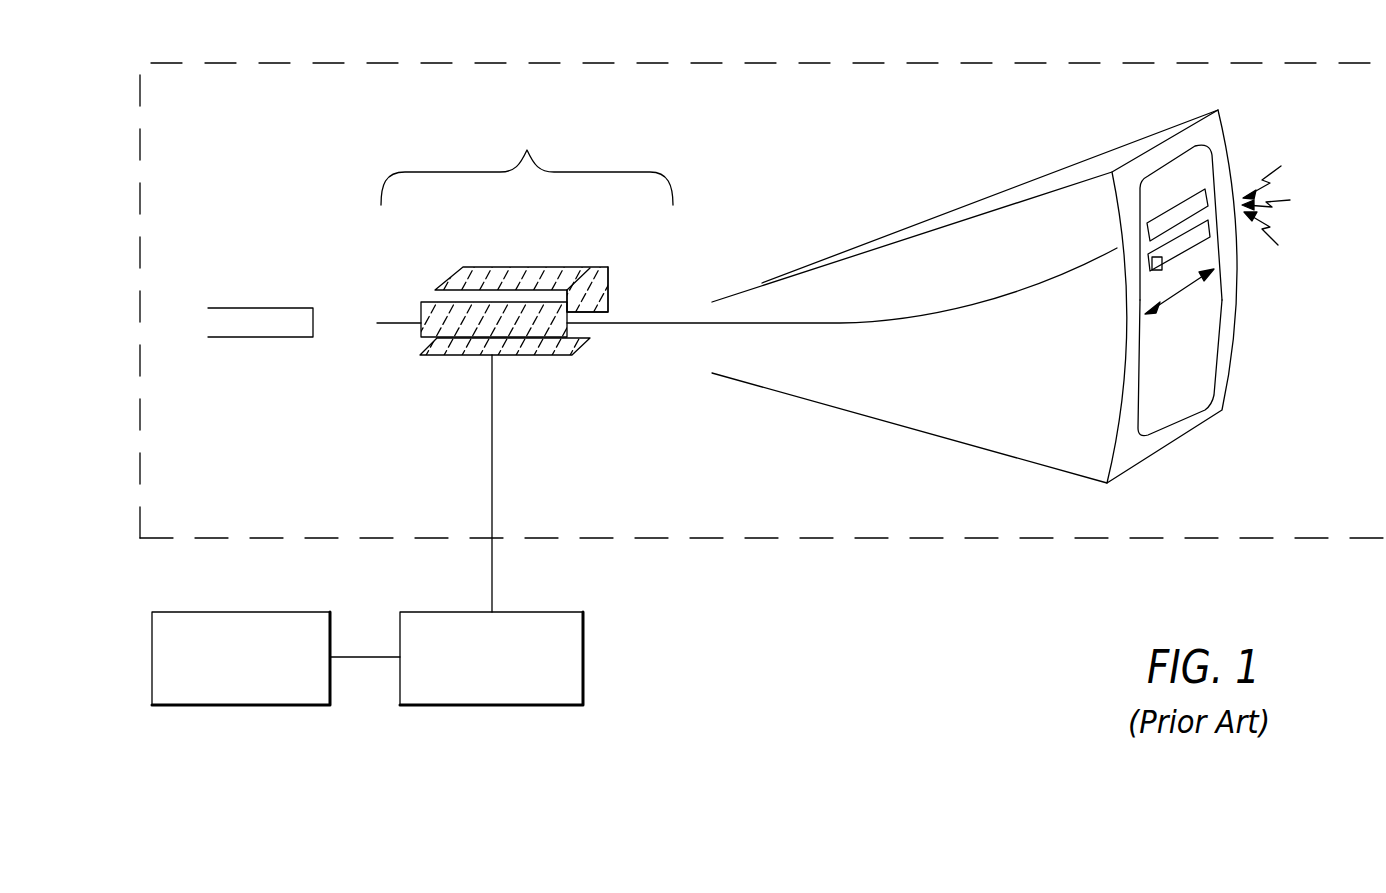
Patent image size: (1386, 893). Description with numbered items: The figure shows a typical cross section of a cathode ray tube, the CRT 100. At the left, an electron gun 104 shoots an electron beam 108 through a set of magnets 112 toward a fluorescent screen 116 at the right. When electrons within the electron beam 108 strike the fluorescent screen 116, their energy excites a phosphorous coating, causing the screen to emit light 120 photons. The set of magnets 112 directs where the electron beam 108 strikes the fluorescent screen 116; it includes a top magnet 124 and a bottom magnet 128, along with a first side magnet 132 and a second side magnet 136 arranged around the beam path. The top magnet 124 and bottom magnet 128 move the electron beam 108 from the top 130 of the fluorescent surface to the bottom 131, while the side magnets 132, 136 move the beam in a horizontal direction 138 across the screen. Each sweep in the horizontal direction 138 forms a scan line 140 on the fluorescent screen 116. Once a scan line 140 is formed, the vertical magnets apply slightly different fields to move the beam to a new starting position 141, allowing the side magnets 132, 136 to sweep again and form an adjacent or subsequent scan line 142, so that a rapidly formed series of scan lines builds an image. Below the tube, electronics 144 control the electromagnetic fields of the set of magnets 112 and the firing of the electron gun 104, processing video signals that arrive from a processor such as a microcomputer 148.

The CRT 100 is at (897, 538).
The electron gun 104 is at (200, 323).
The electron beam 108 is at (857, 325).
The set of magnets 112 is at (527, 152).
The fluorescent screen 116 is at (1165, 182).
The light 120 is at (1273, 168).
The top magnet 124 is at (487, 275).
The bottom magnet 128 is at (475, 355).
The top of the fluorescent surface 130 is at (1195, 160).
The bottom of the fluorescent surface 131 is at (1168, 410).
The first side magnet 132 is at (420, 308).
The second side magnet 136 is at (610, 295).
The horizontal direction 138 is at (1180, 290).
The scan line 140 is at (1165, 223).
The new starting position 141 is at (1147, 307).
The subsequent scan line 142 is at (1198, 243).
The electronics 144 is at (538, 705).
The microcomputer 148 is at (268, 705).